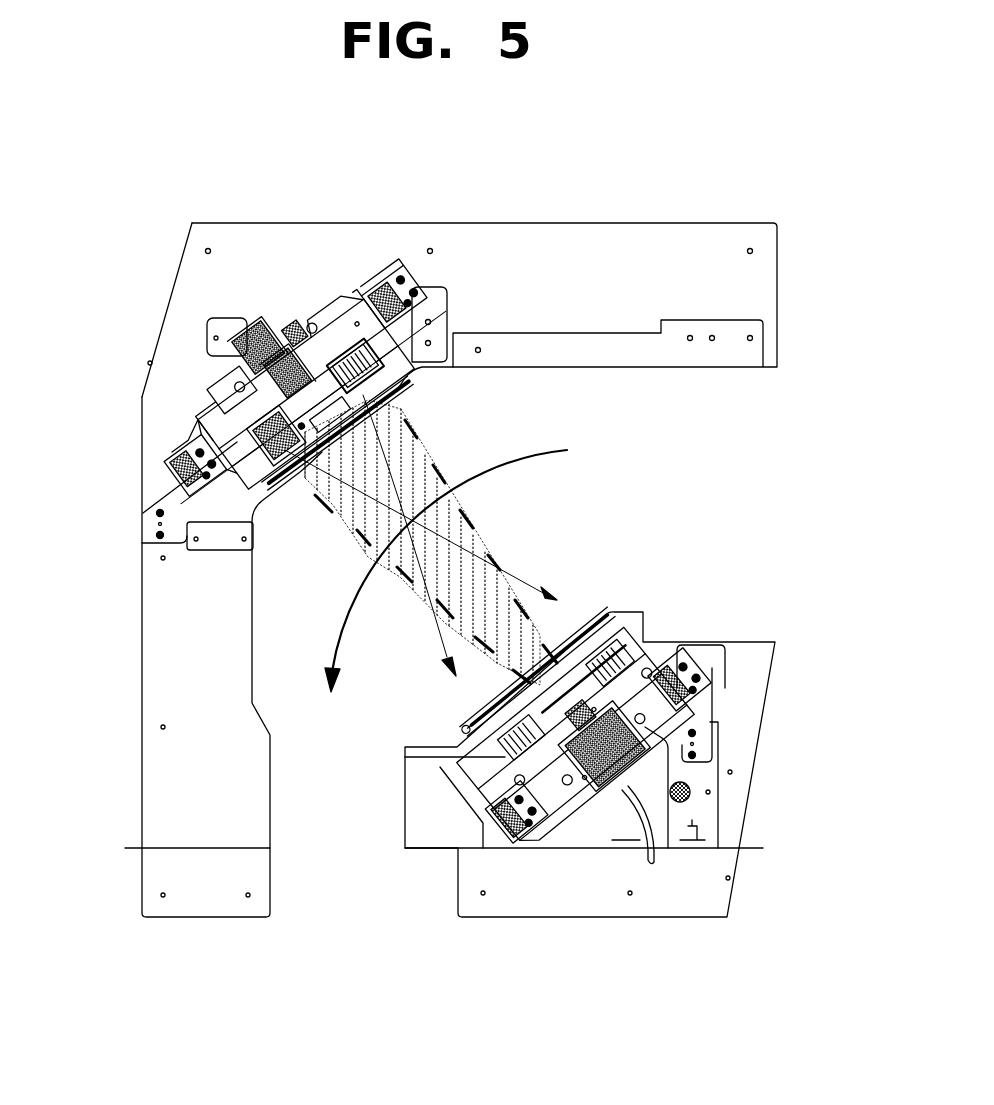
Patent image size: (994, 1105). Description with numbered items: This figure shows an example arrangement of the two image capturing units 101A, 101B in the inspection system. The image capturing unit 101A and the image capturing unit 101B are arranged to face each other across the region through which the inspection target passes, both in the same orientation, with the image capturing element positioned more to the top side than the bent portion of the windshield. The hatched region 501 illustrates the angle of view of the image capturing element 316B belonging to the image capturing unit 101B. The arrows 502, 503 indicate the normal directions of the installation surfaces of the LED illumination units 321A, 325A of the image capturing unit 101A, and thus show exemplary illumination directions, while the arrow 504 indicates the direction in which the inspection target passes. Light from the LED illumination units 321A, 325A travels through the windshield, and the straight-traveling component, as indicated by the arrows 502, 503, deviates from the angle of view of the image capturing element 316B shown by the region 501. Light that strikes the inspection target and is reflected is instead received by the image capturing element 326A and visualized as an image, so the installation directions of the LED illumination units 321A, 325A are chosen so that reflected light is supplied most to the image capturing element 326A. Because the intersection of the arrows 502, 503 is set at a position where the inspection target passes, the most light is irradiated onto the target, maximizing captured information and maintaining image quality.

The image capturing unit 101A is at (243, 337).
The image capturing unit 101B is at (640, 698).
The image capturing element 326A is at (293, 325).
The LED illumination unit 321A is at (383, 363).
The LED illumination unit 325A is at (258, 440).
The image capturing element 316B is at (587, 690).
The hatched region 501 is at (408, 453).
The arrow 502 is at (513, 572).
The arrow 503 is at (438, 633).
The arrow 504 is at (557, 450).